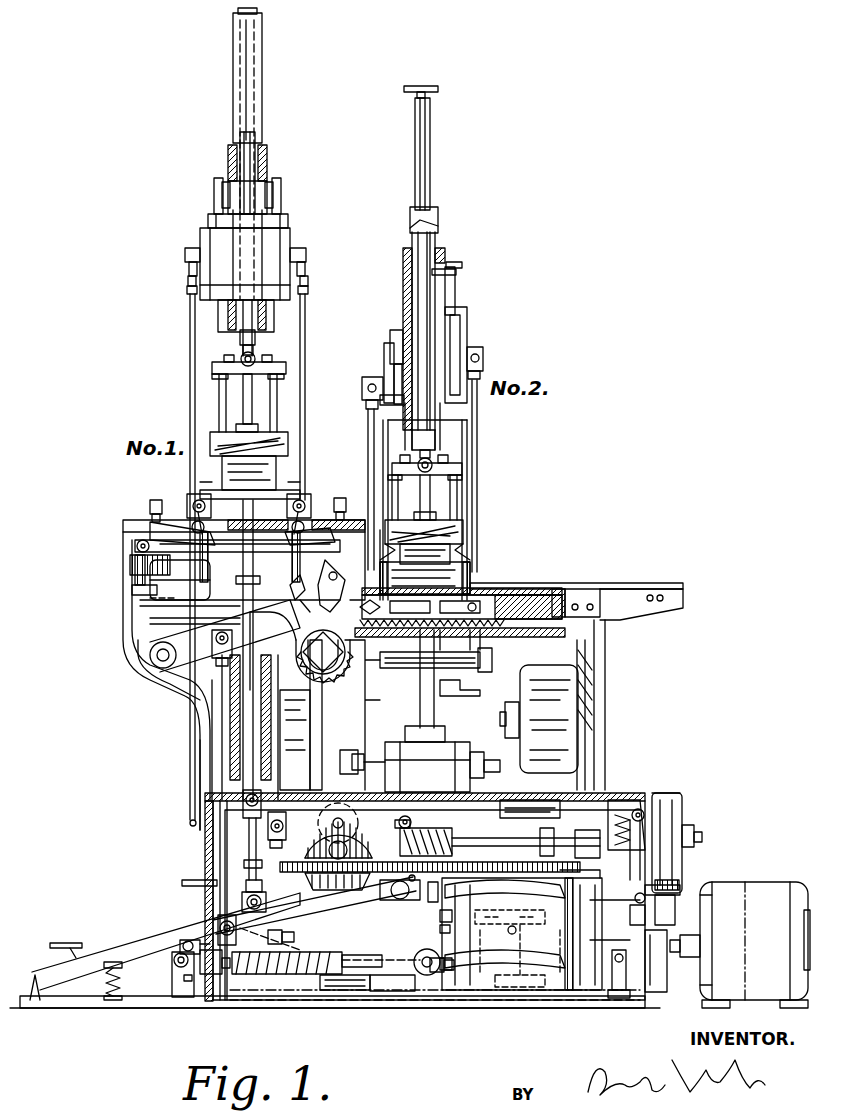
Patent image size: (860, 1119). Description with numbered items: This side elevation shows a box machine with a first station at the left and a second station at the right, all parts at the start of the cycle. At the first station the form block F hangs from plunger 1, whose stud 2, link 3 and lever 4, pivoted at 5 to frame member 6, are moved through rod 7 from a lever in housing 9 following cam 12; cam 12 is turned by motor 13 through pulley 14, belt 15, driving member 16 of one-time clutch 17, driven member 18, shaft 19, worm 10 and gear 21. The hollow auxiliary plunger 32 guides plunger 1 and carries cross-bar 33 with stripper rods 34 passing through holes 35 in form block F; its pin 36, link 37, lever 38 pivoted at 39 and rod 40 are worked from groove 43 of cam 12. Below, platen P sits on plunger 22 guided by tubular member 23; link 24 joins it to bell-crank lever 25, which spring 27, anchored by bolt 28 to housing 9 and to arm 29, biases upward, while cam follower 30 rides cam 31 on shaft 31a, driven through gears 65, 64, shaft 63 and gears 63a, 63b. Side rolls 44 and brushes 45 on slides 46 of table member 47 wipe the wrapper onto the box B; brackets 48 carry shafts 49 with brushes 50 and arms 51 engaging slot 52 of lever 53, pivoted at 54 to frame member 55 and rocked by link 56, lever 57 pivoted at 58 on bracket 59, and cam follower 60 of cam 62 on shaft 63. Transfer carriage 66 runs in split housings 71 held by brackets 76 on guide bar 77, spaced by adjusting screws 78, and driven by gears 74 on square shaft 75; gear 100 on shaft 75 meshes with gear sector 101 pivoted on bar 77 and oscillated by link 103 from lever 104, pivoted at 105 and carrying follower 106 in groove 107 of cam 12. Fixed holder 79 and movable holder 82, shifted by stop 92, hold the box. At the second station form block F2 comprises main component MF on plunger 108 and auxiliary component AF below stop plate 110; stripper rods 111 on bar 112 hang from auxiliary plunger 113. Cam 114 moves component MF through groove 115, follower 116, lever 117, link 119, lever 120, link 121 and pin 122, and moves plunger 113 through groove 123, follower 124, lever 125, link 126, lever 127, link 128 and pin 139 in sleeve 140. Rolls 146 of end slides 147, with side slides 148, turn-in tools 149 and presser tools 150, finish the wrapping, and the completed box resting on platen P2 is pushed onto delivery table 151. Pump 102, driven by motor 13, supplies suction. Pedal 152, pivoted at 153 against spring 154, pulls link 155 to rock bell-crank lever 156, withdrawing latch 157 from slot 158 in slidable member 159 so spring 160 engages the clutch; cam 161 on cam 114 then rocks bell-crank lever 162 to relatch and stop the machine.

The operating rod 1 is at (262, 13).
The coupling sleeve 2 is at (268, 183).
The head flange 3 is at (282, 204).
The cylinder head 4 is at (290, 238).
The tie rod nut 5 is at (304, 290).
The cylinder 6 is at (272, 315).
The tie rod 7 is at (306, 330).
The frame side plate 9 is at (205, 826).
The worm 10 is at (450, 838).
The base 12 is at (398, 1010).
The motor 13 is at (755, 884).
The motor bracket 14 is at (668, 955).
The motor housing 15 is at (702, 905).
The pulley 16 is at (680, 815).
The belt 17 is at (680, 777).
The pulley shaft 18 is at (640, 790).
The worm shaft 19 is at (555, 842).
The link pivot 21 is at (262, 892).
The plunger rod 22 is at (244, 572).
The guide sleeve 23 is at (235, 703).
The connecting rod 24 is at (238, 840).
The pitman 25 is at (280, 925).
The screw bearing 27 is at (240, 985).
The lever 28 is at (192, 984).
The cam plate 29 is at (397, 985).
The bevel gear 30 is at (338, 890).
The feed screw 31 is at (345, 964).
The screw shaft 31a is at (330, 990).
The rod core 32 is at (262, 95).
The crosshead 33 is at (240, 362).
The guide columns 34 is at (220, 388).
The press plate 35 is at (215, 436).
The gland bolt 36 is at (216, 182).
The gland 37 is at (216, 198).
The cylinder cap 38 is at (205, 236).
The tie rod nut 39 is at (190, 288).
The tie rod 40 is at (190, 325).
The stop 43 is at (432, 898).
The platen 44 is at (232, 492).
The platen flange 45 is at (205, 490).
The bolt 46 is at (172, 512).
The table 47 is at (132, 522).
The pivot bracket 48 is at (187, 500).
The pivot pin 49 is at (212, 524).
The rack 50 is at (205, 560).
The toggle link 51 is at (150, 525).
The slide 52 is at (150, 552).
The slide block 53 is at (160, 565).
The pivot 54 is at (136, 545).
The bar 55 is at (135, 534).
The lever 56 is at (200, 626).
The pivot 57 is at (280, 824).
The bearing 58 is at (440, 820).
The bearing 59 is at (470, 758).
The bracket 60 is at (345, 758).
The pin 62 is at (355, 768).
The gear 63 is at (262, 845).
The gear 63a is at (300, 850).
The gear 63b is at (190, 890).
The gear box 64 is at (400, 790).
The pivot 65 is at (235, 896).
The slide bar 66 is at (470, 615).
The link 71 is at (148, 640).
The ratchet 74 is at (330, 594).
The gear 75 is at (298, 604).
The pivot 76 is at (150, 660).
The frame arm 77 is at (168, 690).
The shaft 78 is at (405, 660).
The platen 79 is at (470, 568).
The rod 82 is at (385, 560).
The stop 92 is at (150, 598).
The gear housing 100 is at (318, 690).
The pawl 101 is at (298, 584).
The bracket 102 is at (640, 1020).
The rod 103 is at (188, 780).
The link 104 is at (200, 960).
The roller 105 is at (438, 985).
The cam 106 is at (365, 990).
The roller 107 is at (426, 975).
The rod 108 is at (430, 157).
The handle 110 is at (438, 89).
The guide column 111 is at (462, 498).
The crosshead 112 is at (450, 466).
The collar 113 is at (440, 208).
The band 114 is at (548, 990).
The strap 115 is at (476, 985).
The strap 116 is at (470, 985).
The pin 117 is at (462, 985).
The rod 119 is at (480, 478).
The block 120 is at (465, 335).
The bar 121 is at (455, 296).
The clamp 122 is at (445, 270).
The plate 123 is at (515, 798).
The strap 124 is at (478, 892).
The pin 125 is at (440, 930).
The rod 126 is at (372, 430).
The clamp 127 is at (372, 380).
The rod 128 is at (383, 358).
The bracket 139 is at (398, 332).
The sleeve 140 is at (403, 260).
The rack 146 is at (480, 640).
The block 147 is at (460, 712).
The frame 148 is at (318, 712).
The shaft 149 is at (488, 668).
The bracket 150 is at (460, 685).
The bracket 151 is at (590, 588).
The pedal 152 is at (64, 945).
The pivot 153 is at (176, 966).
The spring 154 is at (104, 984).
The link 155 is at (195, 930).
The coupling 156 is at (690, 915).
The clutch 157 is at (668, 885).
The spring 158 is at (625, 800).
The hub 159 is at (700, 840).
The lever 160 is at (625, 810).
The slot 161 is at (512, 918).
The plate 162 is at (548, 990).
The form F is at (286, 450).
The pattern P is at (232, 490).
The block B is at (140, 590).
The form AF is at (455, 522).
The form MF is at (455, 542).
The form F2 is at (460, 556).
The pattern P2 is at (480, 592).